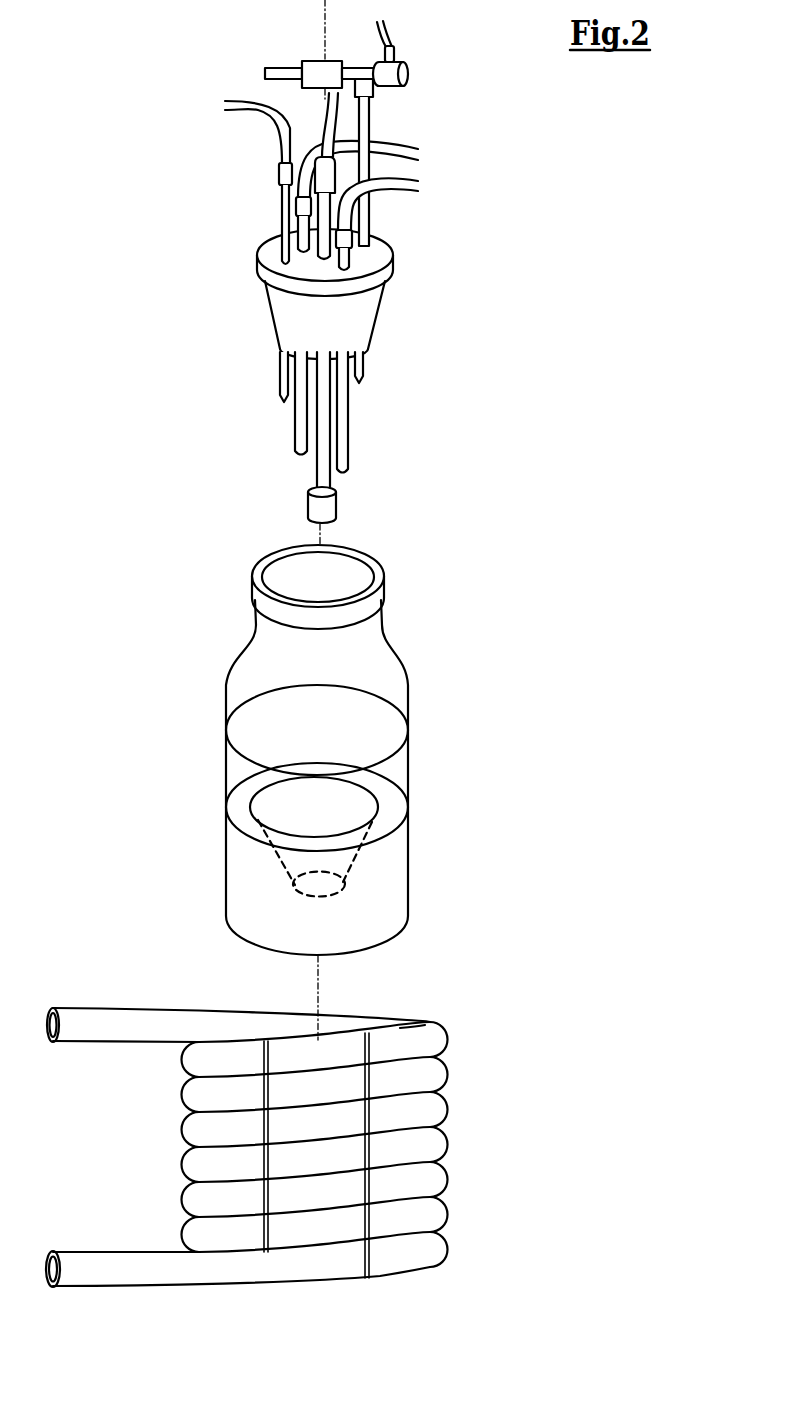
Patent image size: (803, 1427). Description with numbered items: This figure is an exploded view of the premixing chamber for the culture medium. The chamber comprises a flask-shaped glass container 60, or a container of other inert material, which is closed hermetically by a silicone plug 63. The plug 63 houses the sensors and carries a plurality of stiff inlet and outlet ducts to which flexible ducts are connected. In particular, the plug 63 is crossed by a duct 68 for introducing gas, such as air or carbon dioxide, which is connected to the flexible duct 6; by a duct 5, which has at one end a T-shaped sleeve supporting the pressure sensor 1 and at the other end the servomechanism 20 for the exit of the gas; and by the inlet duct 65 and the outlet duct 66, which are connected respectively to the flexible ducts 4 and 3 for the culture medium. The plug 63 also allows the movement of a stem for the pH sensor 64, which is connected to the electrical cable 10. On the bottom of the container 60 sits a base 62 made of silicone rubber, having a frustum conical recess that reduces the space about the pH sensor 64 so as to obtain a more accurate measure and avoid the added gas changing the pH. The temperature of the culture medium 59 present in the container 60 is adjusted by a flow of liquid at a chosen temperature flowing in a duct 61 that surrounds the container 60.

The pressure sensor 1 is at (397, 72).
The flexible duct 3 is at (390, 190).
The flexible duct 4 is at (417, 152).
The duct 5 is at (370, 122).
The flexible duct 6 is at (278, 122).
The electrical cable 10 is at (322, 135).
The servomechanism 20 is at (322, 58).
The culture medium 59 is at (395, 775).
The glass container 60 is at (393, 655).
The duct 61 is at (402, 1083).
The base 62 is at (350, 915).
The silicone plug 63 is at (345, 322).
The pH sensor 64 is at (325, 507).
The inlet duct 65 is at (300, 437).
The outlet duct 66 is at (343, 437).
The duct 68 is at (285, 365).